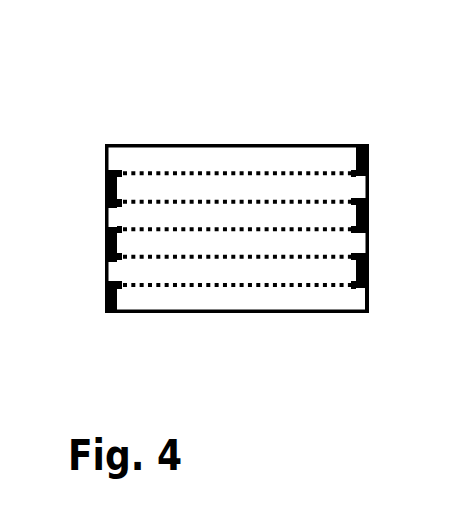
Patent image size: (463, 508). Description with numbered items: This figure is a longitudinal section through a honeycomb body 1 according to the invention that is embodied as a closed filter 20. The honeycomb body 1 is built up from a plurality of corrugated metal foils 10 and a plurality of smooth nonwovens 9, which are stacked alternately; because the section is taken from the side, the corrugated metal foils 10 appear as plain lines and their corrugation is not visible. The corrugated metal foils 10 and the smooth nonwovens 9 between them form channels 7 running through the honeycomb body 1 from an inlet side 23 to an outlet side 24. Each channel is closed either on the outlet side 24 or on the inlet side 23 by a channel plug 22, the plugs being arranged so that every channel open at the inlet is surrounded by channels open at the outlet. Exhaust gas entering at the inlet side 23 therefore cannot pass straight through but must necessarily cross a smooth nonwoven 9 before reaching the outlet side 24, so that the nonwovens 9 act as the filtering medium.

The honeycomb body 1 is at (300, 123).
The closed filter 20 is at (260, 135).
The corrugated metal foils 10 is at (156, 158).
The smooth nonwovens 9 is at (183, 172).
The channel plugs 22 is at (104, 172).
The inlet side 23 is at (105, 207).
The channels 7 is at (113, 220).
The outlet side 24 is at (380, 272).